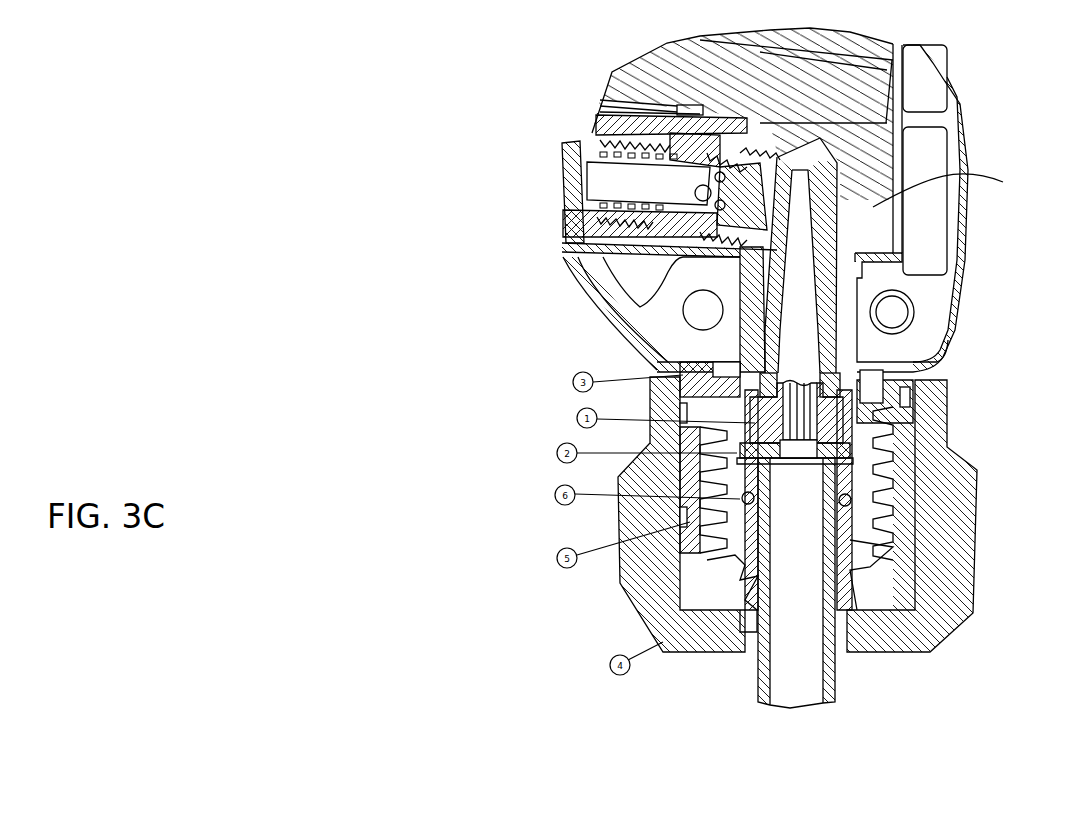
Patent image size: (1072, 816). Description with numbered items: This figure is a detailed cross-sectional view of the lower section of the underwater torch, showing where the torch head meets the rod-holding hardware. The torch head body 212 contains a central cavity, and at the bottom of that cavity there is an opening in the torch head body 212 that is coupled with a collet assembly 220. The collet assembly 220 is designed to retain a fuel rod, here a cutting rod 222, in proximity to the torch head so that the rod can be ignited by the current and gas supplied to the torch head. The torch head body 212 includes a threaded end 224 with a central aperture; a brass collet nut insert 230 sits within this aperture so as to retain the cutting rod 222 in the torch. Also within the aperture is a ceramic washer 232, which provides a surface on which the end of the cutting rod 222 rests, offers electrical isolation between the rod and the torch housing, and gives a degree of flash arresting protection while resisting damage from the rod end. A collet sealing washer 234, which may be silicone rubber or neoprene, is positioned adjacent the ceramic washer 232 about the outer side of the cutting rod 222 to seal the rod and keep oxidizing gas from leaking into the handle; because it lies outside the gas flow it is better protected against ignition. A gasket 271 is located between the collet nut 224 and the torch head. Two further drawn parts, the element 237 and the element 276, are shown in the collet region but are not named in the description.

The housing 212 is at (816, 200).
The nut assembly 220 is at (543, 413).
The shaft 222 is at (797, 665).
The threaded nut 224 is at (885, 479).
The locking wedge 230 is at (737, 651).
The flange 232 is at (890, 368).
The washer 234 is at (750, 462).
The pin 237 is at (690, 393).
The clamp body 271 is at (657, 367).
The retaining clip 276 is at (758, 548).